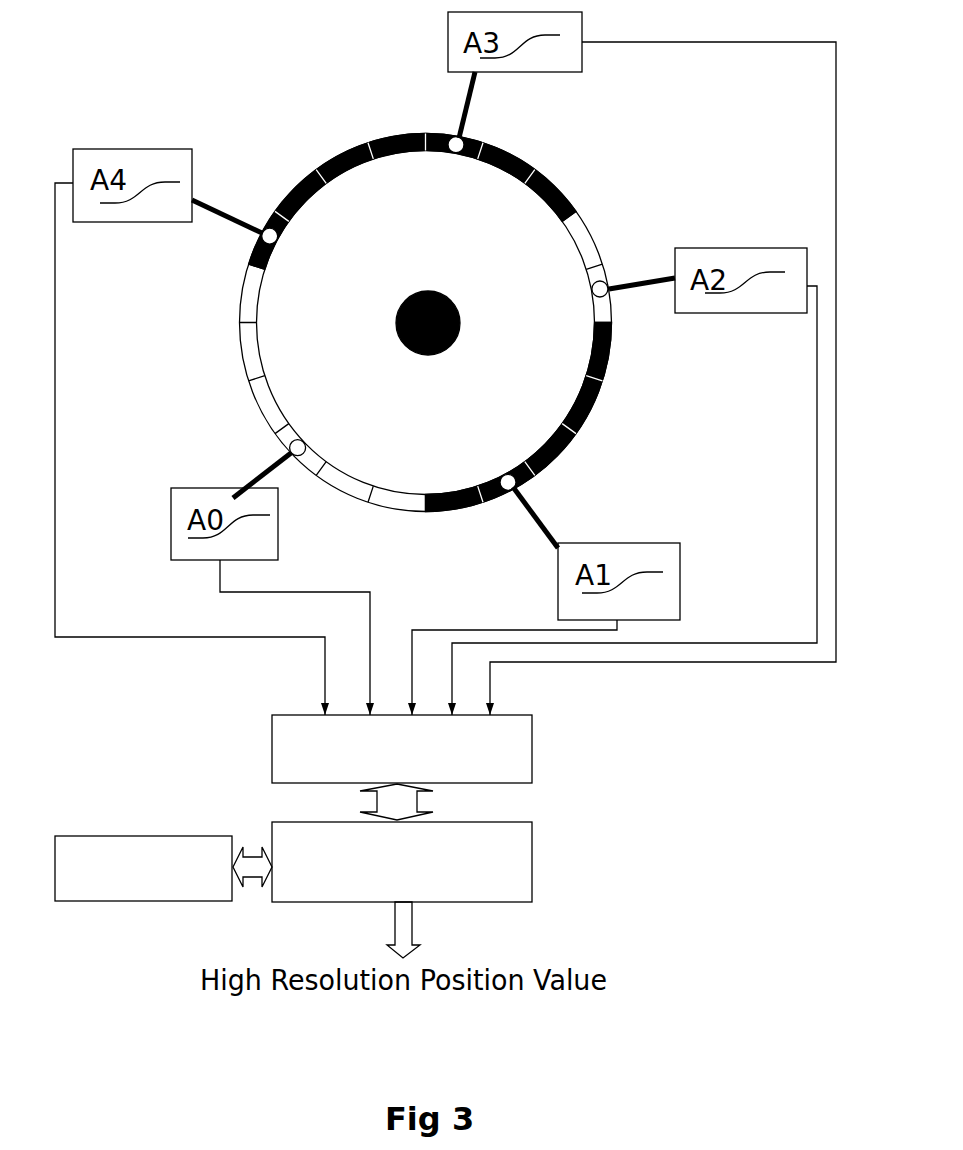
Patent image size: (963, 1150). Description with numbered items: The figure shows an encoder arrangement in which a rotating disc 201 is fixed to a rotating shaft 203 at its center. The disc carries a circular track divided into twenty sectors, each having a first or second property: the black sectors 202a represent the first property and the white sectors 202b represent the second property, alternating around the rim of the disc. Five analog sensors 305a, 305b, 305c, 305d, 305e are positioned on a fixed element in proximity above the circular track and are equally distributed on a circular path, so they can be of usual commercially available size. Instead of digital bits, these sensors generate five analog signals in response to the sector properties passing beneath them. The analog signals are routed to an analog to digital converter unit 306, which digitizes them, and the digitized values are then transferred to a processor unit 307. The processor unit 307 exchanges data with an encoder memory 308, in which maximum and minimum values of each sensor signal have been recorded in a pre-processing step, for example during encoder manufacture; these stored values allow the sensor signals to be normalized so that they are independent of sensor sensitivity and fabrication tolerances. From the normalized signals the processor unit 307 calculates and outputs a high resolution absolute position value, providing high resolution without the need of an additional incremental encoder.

The rotating disc 201 is at (386, 293).
The black sectors 202a is at (295, 183).
The white sectors 202b is at (253, 402).
The rotating shaft 203 is at (393, 328).
The analog sensor 305a is at (287, 448).
The analog sensor 305b is at (520, 487).
The analog sensor 305c is at (607, 280).
The analog sensor 305d is at (468, 138).
The analog sensor 305e is at (257, 238).
The analog to digital converter unit 306 is at (543, 750).
The processor unit 307 is at (538, 858).
The encoder memory 308 is at (140, 835).